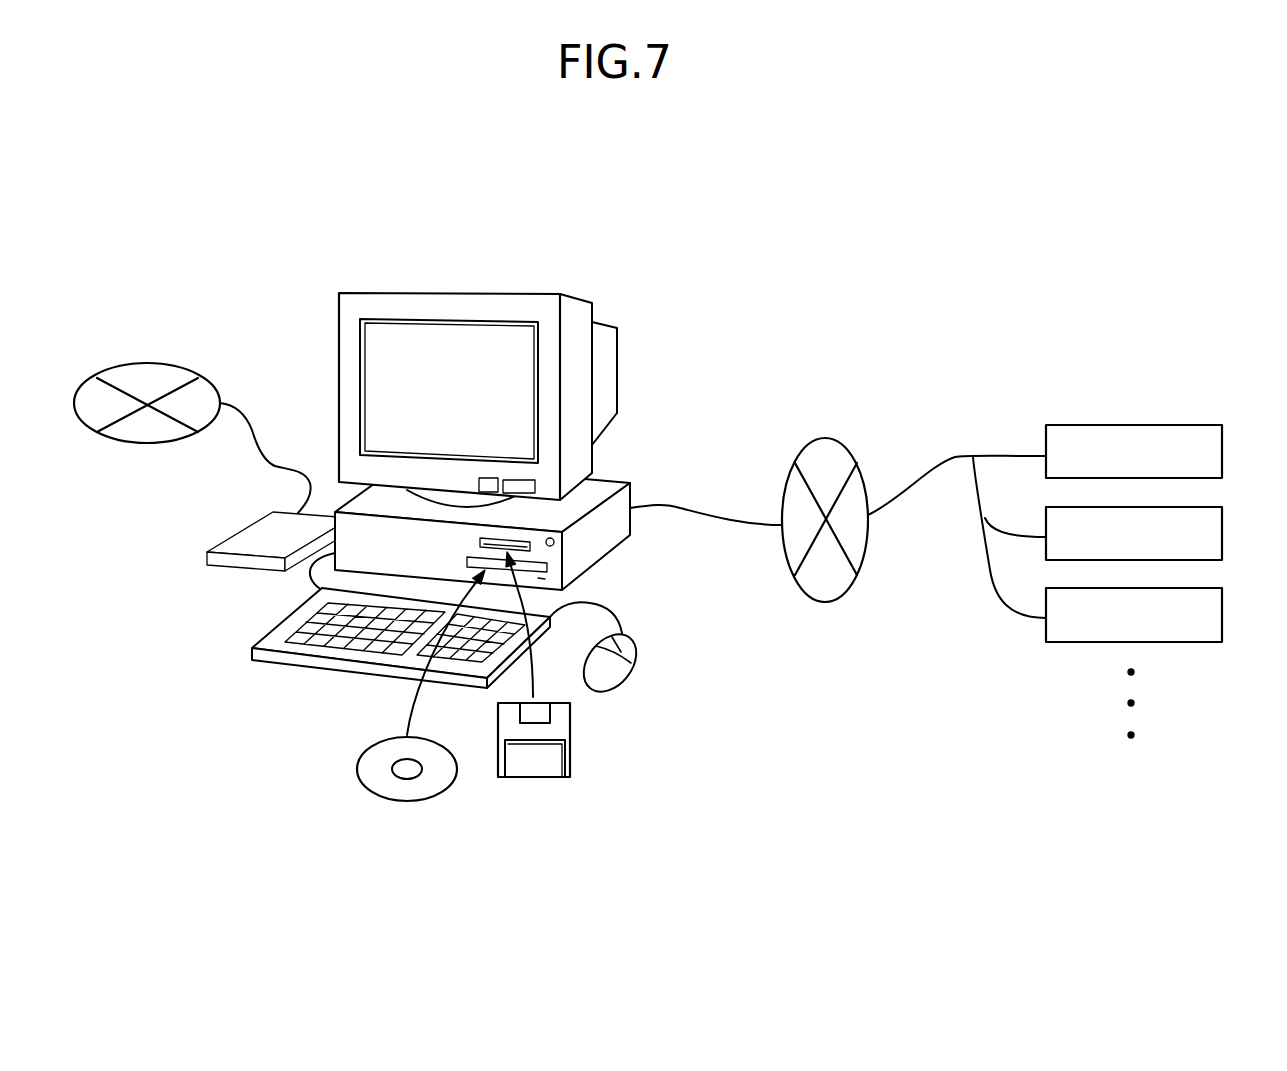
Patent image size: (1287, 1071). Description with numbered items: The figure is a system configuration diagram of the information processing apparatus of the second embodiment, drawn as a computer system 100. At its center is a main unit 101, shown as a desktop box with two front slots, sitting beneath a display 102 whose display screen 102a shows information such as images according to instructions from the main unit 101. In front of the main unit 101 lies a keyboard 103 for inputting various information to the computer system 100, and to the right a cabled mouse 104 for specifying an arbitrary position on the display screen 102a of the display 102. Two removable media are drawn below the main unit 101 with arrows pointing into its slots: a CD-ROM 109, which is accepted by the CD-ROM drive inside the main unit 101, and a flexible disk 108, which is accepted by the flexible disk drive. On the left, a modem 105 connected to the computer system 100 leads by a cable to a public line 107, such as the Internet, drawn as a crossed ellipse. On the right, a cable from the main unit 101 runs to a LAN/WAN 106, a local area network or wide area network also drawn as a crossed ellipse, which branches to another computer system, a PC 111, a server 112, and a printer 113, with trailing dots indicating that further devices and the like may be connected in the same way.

The computer system 100 is at (537, 250).
The main unit 101 is at (600, 483).
The display 102 is at (498, 356).
The display screen 102a is at (440, 367).
The keyboard 103 is at (277, 633).
The mouse 104 is at (612, 670).
The modem 105 is at (260, 535).
The LAN/WAN 106 is at (825, 603).
The public line 107 is at (132, 433).
The flexible disk 108 is at (530, 763).
The CD-ROM 109 is at (357, 768).
The another computer system (PC) 111 is at (1218, 446).
The server 112 is at (1218, 530).
The printer 113 is at (1218, 611).